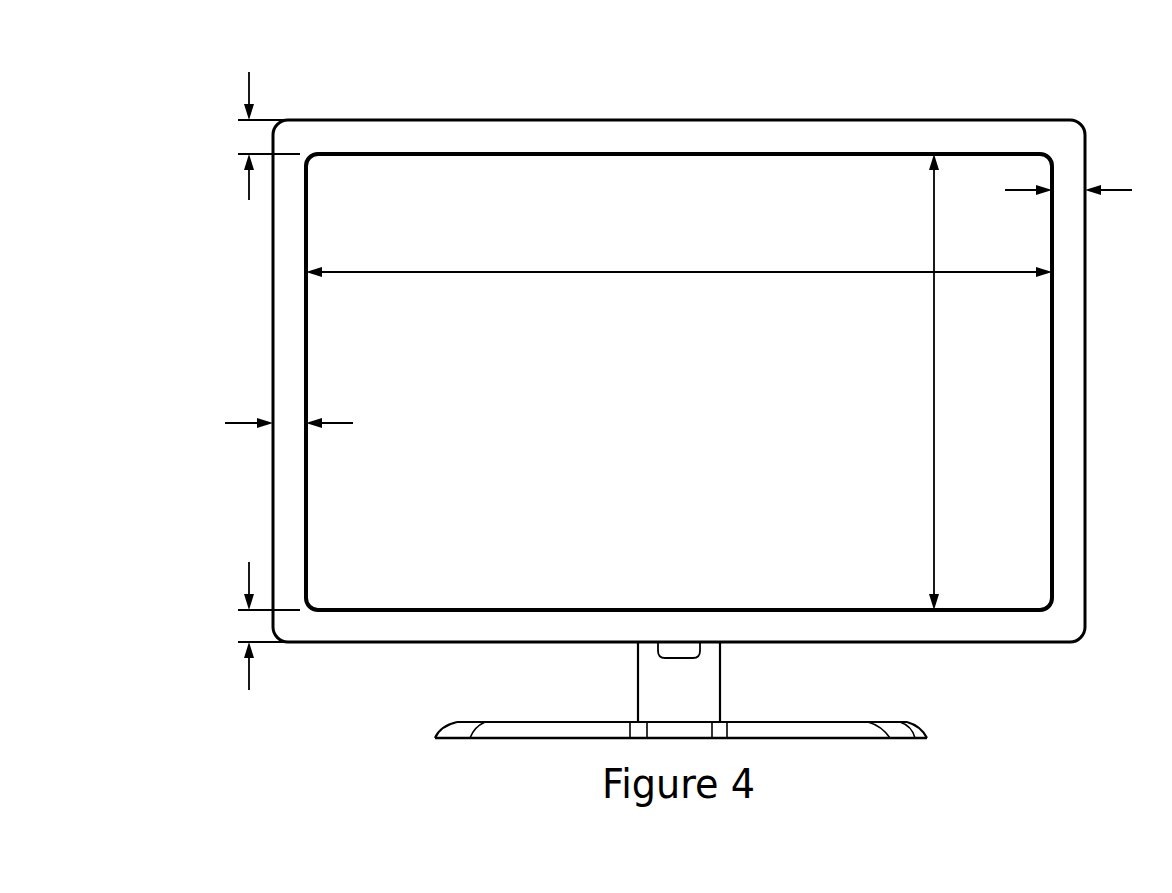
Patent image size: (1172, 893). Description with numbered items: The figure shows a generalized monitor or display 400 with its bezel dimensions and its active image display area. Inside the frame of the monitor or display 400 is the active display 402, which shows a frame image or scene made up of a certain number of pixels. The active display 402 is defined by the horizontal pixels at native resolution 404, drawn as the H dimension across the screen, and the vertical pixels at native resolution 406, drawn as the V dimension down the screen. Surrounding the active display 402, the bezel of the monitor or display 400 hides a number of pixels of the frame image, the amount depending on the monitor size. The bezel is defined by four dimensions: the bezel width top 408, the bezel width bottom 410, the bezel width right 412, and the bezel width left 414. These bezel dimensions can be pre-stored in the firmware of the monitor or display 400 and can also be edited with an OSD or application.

The monitor or display 400 is at (362, 74).
The active display 402 is at (642, 477).
The horizontal pixels at native resolution 404 is at (466, 271).
The vertical pixels at native resolution 406 is at (936, 553).
The bezel width top 408 is at (249, 88).
The bezel width bottom 410 is at (249, 675).
The bezel width right 412 is at (1132, 190).
The bezel width left 414 is at (243, 428).